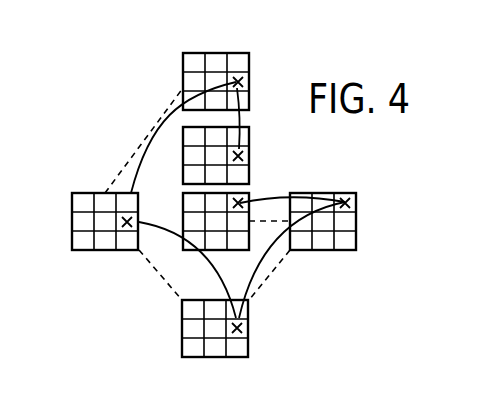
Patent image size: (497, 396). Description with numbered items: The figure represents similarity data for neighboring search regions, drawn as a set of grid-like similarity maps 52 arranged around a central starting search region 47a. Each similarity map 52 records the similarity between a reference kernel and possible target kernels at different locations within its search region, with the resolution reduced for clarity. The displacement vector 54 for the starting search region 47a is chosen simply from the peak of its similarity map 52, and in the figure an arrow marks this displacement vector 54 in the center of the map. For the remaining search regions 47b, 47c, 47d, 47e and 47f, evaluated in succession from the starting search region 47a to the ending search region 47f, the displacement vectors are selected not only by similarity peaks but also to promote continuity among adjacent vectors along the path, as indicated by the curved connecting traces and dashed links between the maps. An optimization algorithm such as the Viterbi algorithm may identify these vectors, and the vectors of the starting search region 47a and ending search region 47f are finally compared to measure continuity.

The starting search region 47a is at (250, 199).
The search region 47b is at (324, 251).
The search region 47c is at (182, 327).
The search region 47d is at (103, 193).
The search region 47e is at (250, 62).
The ending search region 47f is at (250, 134).
The similarity map 52 is at (170, 151).
The displacement vector 54 is at (219, 221).